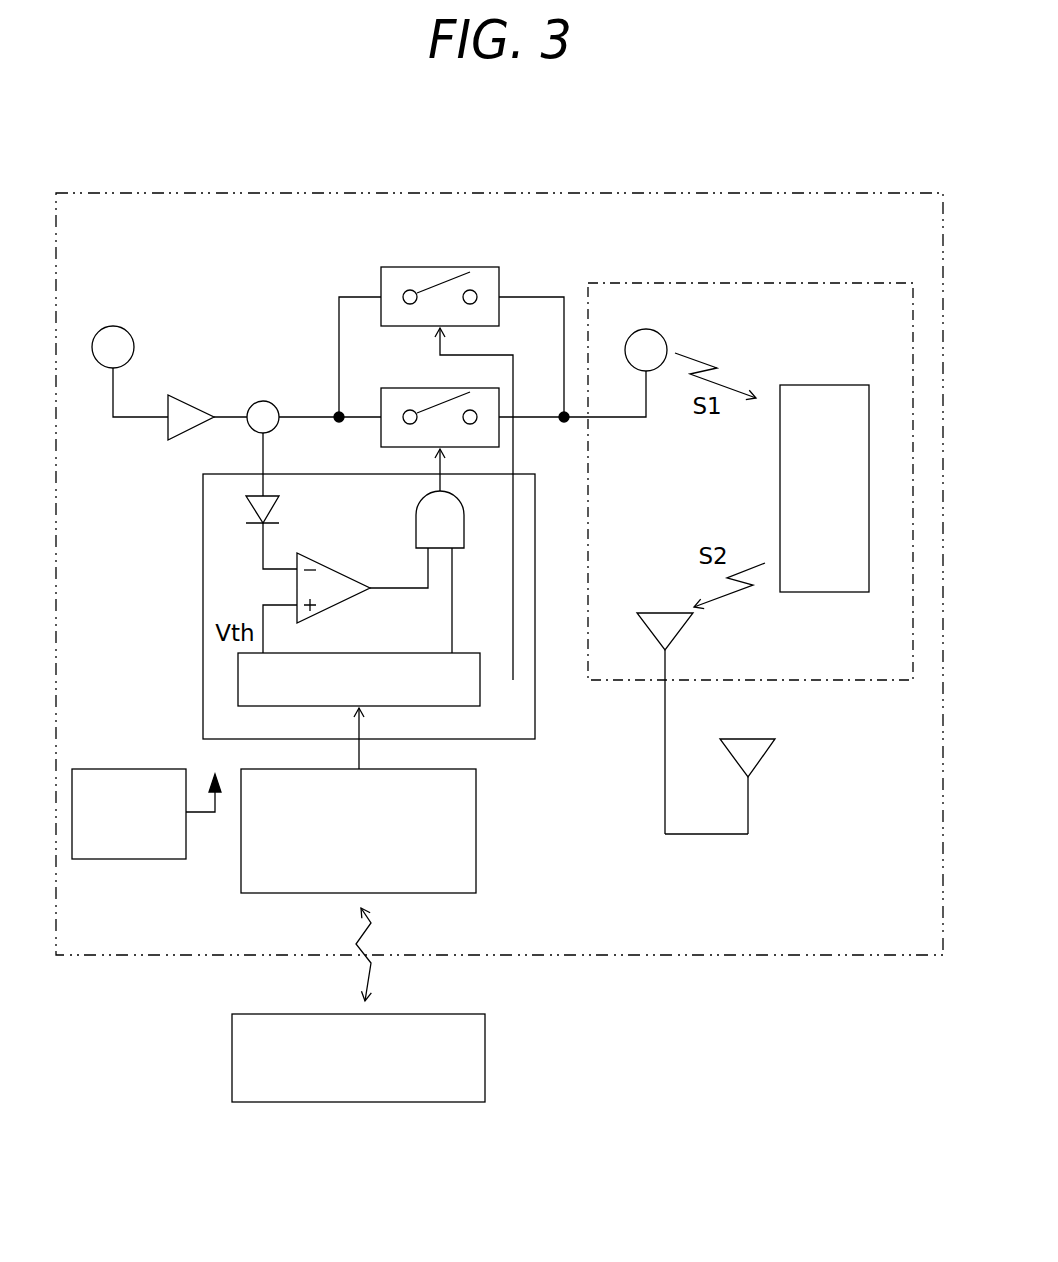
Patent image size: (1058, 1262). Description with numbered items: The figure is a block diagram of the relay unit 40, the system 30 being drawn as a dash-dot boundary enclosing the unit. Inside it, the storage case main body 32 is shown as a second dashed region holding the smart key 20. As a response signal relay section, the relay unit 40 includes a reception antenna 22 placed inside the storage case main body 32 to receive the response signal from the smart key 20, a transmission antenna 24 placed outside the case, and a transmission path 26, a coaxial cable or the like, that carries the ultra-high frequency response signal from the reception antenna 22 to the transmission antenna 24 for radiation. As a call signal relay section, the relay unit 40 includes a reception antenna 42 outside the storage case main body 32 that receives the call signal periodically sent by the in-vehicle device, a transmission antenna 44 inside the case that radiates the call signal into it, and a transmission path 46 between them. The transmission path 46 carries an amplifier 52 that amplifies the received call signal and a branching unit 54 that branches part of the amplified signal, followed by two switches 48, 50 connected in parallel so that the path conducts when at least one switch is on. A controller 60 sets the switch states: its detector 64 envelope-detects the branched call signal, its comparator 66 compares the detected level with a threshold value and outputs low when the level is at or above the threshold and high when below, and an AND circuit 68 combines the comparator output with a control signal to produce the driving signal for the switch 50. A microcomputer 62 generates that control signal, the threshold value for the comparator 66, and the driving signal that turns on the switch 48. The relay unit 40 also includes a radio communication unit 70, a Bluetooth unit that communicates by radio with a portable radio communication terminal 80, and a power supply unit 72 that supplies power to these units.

The smart key 20 is at (826, 385).
The reception antenna 22 is at (664, 613).
The transmission antenna 24 is at (748, 739).
The transmission path 26 is at (705, 834).
The vehicle control system 30 is at (552, 173).
The storage case main body 32 is at (752, 283).
The relay unit 40 is at (741, 193).
The reception antenna 42 is at (113, 326).
The transmission antenna 44 is at (648, 329).
The transmission path 46 is at (309, 415).
The switch 48 is at (437, 267).
The switch 50 is at (409, 388).
The amplifier 52 is at (182, 395).
The branching unit 54 is at (263, 401).
The controller 60 is at (203, 607).
The microcomputer 62 is at (357, 653).
The detector 64 is at (278, 499).
The comparator 66 is at (342, 569).
The AND circuit 68 is at (463, 527).
The radio communication unit 70 is at (476, 813).
The power supply unit 72 is at (107, 769).
The portable radio communication terminal 80 is at (485, 1058).